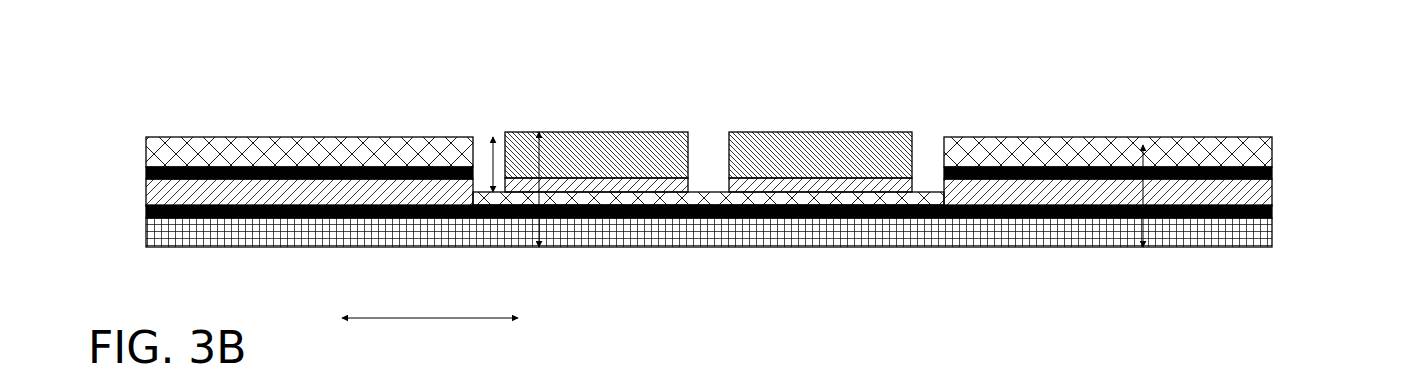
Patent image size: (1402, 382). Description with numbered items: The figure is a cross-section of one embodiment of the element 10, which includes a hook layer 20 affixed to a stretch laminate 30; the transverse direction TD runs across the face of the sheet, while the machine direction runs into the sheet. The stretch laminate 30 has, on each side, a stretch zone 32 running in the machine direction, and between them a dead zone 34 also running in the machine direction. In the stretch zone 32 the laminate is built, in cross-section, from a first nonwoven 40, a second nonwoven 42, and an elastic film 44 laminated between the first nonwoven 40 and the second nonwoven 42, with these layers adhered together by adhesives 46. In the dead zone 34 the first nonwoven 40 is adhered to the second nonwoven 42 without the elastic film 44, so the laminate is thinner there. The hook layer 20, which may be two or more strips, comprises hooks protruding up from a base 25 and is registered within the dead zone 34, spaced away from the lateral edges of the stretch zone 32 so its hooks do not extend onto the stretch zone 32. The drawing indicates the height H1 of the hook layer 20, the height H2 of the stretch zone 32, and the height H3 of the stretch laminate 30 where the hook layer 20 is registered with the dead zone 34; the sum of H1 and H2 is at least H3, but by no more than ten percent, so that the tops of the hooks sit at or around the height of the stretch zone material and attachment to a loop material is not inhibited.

The element 10 is at (1289, 122).
The hook layer 20 is at (585, 150).
The base 25 is at (553, 186).
The stretch laminate 30 is at (308, 126).
The stretch zone 32 is at (152, 77).
The dead zone 34 is at (473, 60).
The first nonwoven 40 is at (182, 145).
The second nonwoven 42 is at (180, 233).
The elastic film 44 is at (162, 190).
The adhesives 46 is at (146, 168).
The height of the hook layer H1 is at (492, 149).
The height of the stretch zone H2 is at (1143, 195).
The height of the stretch laminate where the hook layer is registered with the dead H3 is at (540, 227).
The transverse direction TD is at (430, 298).